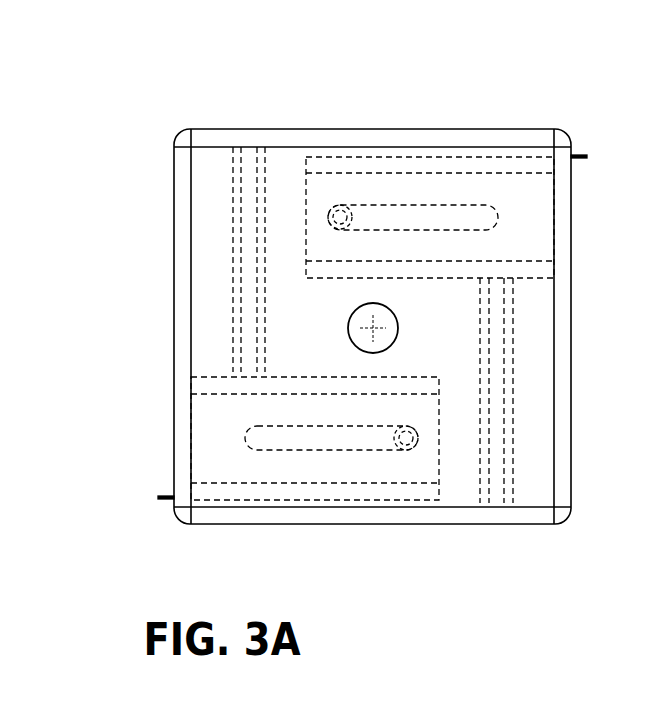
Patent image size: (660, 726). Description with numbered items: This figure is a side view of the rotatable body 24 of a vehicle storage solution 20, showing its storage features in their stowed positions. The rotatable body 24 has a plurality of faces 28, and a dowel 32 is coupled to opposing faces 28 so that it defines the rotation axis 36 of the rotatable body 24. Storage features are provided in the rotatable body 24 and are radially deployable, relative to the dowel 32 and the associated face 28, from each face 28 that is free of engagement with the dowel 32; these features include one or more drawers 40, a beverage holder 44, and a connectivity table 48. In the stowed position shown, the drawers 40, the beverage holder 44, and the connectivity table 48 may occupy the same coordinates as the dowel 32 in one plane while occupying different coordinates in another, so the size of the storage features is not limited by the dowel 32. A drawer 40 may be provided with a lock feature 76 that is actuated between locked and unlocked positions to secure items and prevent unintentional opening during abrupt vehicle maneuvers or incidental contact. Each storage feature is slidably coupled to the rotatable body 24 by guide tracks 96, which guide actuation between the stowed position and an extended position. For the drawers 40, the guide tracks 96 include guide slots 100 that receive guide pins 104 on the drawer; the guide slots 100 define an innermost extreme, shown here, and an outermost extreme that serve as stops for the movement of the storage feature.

The storage solution 20 is at (141, 158).
The rotatable body 24 is at (381, 125).
The faces 28 is at (174, 247).
The dowel 32 is at (398, 330).
The rotation axis 36 is at (352, 342).
The drawer 40 is at (490, 159).
The beverage holder 44 is at (232, 150).
The connectivity table 48 is at (514, 494).
The lock feature 76 is at (168, 501).
The guide tracks 96 is at (249, 252).
The guide slots 100 is at (432, 217).
The guide pins 104 is at (346, 208).